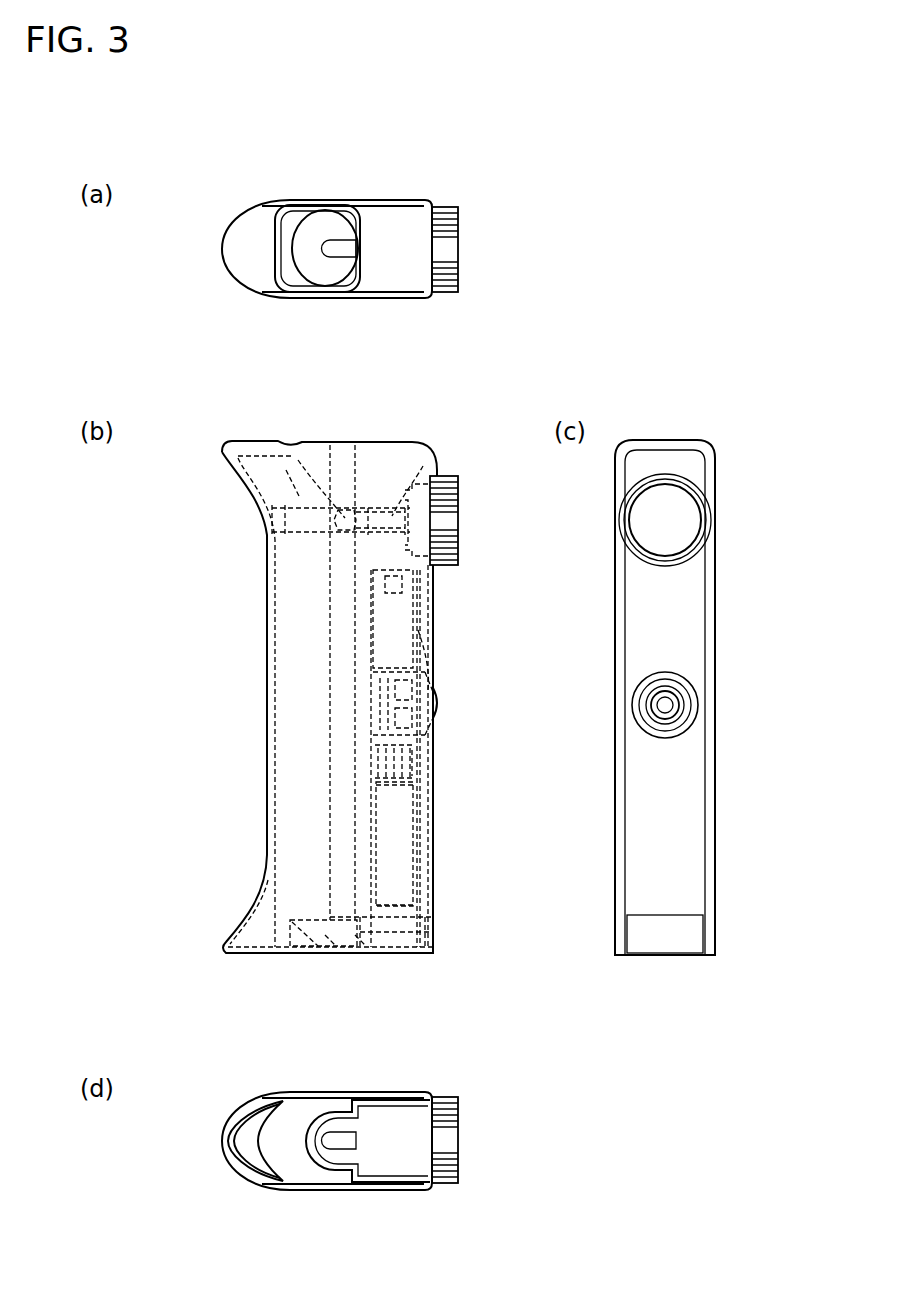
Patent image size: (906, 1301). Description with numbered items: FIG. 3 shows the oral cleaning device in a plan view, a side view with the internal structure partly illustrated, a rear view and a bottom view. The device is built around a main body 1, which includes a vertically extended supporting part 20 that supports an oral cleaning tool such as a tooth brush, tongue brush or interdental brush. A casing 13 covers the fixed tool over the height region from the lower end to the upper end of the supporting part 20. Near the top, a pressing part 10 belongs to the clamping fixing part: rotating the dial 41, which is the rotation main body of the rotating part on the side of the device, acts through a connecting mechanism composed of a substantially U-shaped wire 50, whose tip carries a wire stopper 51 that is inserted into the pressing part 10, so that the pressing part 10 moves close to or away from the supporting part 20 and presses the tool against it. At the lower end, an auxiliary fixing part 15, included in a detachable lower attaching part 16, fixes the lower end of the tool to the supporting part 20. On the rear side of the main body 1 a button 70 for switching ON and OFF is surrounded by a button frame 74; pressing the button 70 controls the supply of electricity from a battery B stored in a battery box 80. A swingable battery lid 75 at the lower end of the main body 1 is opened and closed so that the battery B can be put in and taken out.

The main body 1 is at (441, 632).
The pressing part 10 is at (322, 212).
The casing 13 is at (297, 712).
The auxiliary fixing part 15 is at (327, 948).
The lower attaching part 16 is at (391, 961).
The supporting part 20 is at (340, 270).
The dial 41 is at (458, 224).
The wire 50 is at (417, 466).
The wire stopper 51 is at (308, 468).
The button 70 is at (440, 704).
The button frame 74 is at (690, 690).
The battery lid 75 is at (412, 955).
The battery box 80 is at (422, 833).
The battery B is at (400, 871).